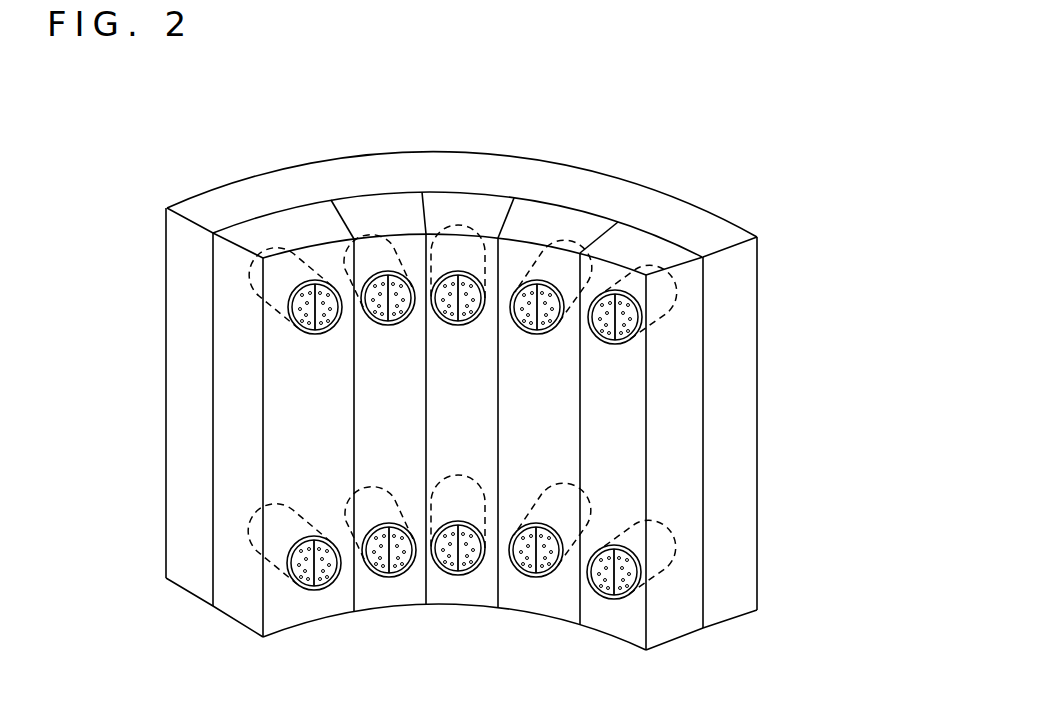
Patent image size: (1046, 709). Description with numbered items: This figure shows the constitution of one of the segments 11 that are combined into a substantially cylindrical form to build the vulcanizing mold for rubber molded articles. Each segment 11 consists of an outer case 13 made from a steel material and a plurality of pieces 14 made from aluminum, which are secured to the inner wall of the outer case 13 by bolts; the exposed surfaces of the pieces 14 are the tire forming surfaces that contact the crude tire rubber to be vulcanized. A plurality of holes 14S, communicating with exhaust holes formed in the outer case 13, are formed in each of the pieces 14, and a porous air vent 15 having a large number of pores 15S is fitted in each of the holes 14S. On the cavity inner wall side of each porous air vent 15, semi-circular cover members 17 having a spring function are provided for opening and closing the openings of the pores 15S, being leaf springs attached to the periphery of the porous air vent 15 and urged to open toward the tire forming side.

The segment 11 is at (702, 193).
The outer case 13 is at (745, 343).
The piece 14 is at (457, 214).
The hole 14S is at (573, 320).
The porous air vent 15 is at (317, 281).
The pore 15S is at (306, 320).
The cover member 17 is at (299, 284).